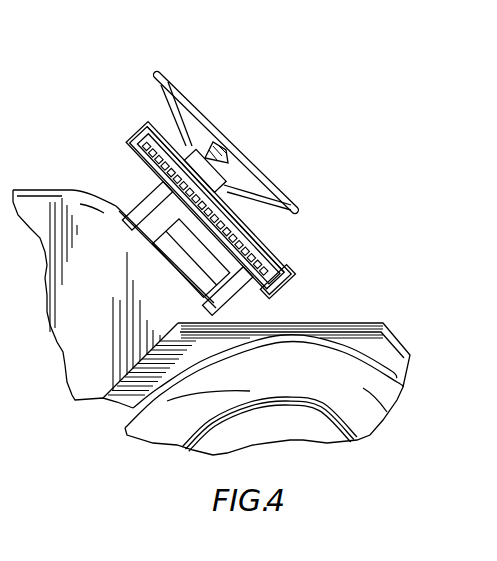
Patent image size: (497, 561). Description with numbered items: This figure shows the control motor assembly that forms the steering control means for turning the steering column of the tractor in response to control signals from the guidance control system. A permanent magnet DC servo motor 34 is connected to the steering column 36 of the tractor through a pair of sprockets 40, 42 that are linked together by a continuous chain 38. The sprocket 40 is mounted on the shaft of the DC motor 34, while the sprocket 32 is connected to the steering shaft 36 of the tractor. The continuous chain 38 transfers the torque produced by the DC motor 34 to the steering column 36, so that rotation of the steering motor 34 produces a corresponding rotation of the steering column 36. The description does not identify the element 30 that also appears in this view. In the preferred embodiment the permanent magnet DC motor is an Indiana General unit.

The handle lever 30 is at (158, 72).
The sprocket 32 is at (130, 147).
The permanent magnet DC servo motor 34 is at (243, 312).
The steering column 36 is at (188, 147).
The continuous chain 38 is at (250, 228).
The sprocket 40 is at (280, 262).
The sprocket 42 is at (133, 137).